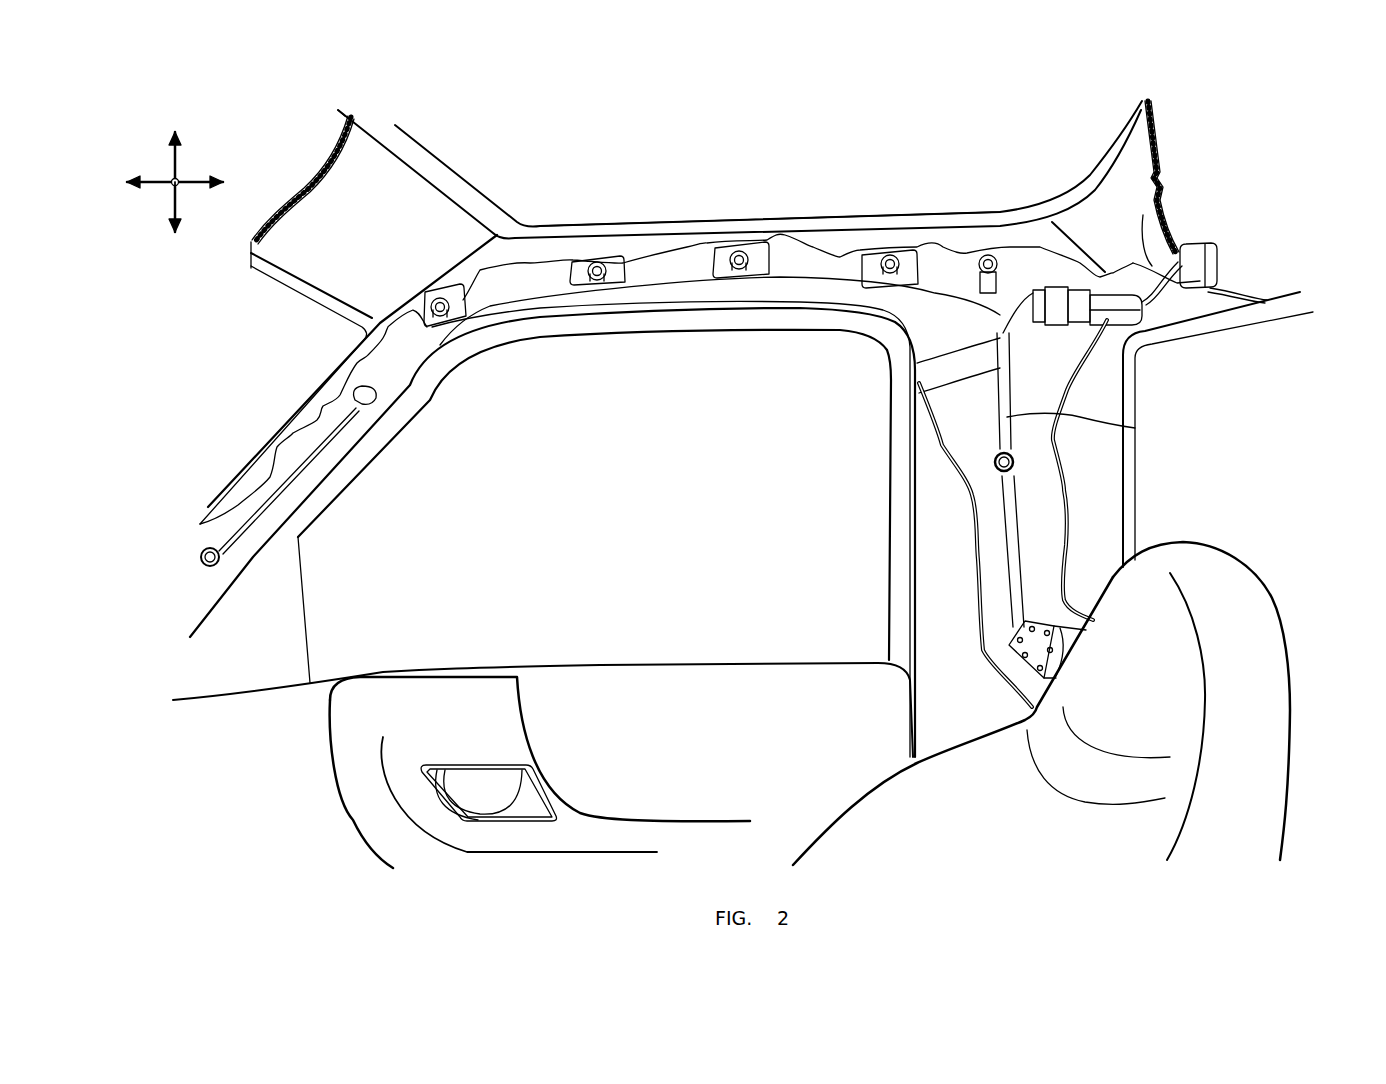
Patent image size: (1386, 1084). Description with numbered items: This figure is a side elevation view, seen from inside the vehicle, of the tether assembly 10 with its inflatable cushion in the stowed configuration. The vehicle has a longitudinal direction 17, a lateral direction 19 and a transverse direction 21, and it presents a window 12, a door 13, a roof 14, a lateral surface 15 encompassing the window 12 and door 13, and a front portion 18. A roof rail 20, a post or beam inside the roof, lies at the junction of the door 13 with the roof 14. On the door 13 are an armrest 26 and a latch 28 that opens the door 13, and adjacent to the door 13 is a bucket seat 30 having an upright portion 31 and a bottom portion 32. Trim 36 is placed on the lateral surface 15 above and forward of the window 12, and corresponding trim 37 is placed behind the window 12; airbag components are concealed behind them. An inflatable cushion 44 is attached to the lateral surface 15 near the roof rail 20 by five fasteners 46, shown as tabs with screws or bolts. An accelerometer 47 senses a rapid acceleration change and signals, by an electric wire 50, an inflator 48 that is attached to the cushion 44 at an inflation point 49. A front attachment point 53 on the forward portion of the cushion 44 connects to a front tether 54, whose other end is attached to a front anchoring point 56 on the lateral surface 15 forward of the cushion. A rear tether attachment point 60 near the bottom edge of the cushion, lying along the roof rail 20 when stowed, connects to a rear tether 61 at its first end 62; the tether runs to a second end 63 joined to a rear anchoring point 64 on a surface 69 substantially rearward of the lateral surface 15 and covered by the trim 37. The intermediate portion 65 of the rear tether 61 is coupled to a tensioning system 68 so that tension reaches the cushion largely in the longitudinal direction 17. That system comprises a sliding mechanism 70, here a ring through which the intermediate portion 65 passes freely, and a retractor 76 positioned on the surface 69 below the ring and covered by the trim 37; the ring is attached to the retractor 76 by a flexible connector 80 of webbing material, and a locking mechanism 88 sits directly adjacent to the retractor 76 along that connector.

The tether assembly 10 is at (714, 192).
The window 12 is at (268, 802).
The door 13 is at (305, 651).
The roof 14 is at (824, 187).
The lateral surface 15 is at (856, 717).
The longitudinal direction 17 is at (205, 178).
The front portion 18 is at (204, 673).
The lateral direction 19 is at (180, 192).
The roof rail 20 is at (665, 213).
The transverse direction 21 is at (166, 205).
The armrest 26 is at (593, 850).
The latch 28 is at (493, 783).
The seat 30 is at (1283, 847).
The upright portion 31 is at (1265, 757).
The bottom portion 32 is at (845, 870).
The trim 36 is at (310, 407).
The trim 37 is at (1093, 477).
The inflatable cushion 44 is at (530, 303).
The fasteners 46 is at (437, 300).
The accelerometer 47 is at (1195, 246).
The inflator 48 is at (1137, 315).
The inflation point 49 is at (1047, 322).
The electric wire 50 is at (1160, 192).
The front attachment point 53 is at (365, 397).
The front tether 54 is at (310, 460).
The front anchoring point 56 is at (201, 556).
The rear tether attachment point 60 is at (915, 360).
The rear tether 61 is at (1133, 427).
The first end 62 is at (917, 393).
The second end 63 is at (1010, 288).
The rear anchoring point 64 is at (988, 256).
The intermediate portion 65 is at (997, 447).
The tensioning system 68 is at (1096, 552).
The surface 69 is at (1050, 516).
The sliding mechanism 70 is at (987, 455).
The retractor 76 is at (1063, 657).
The flexible connector 80 is at (1005, 540).
The locking mechanism 88 is at (1030, 628).